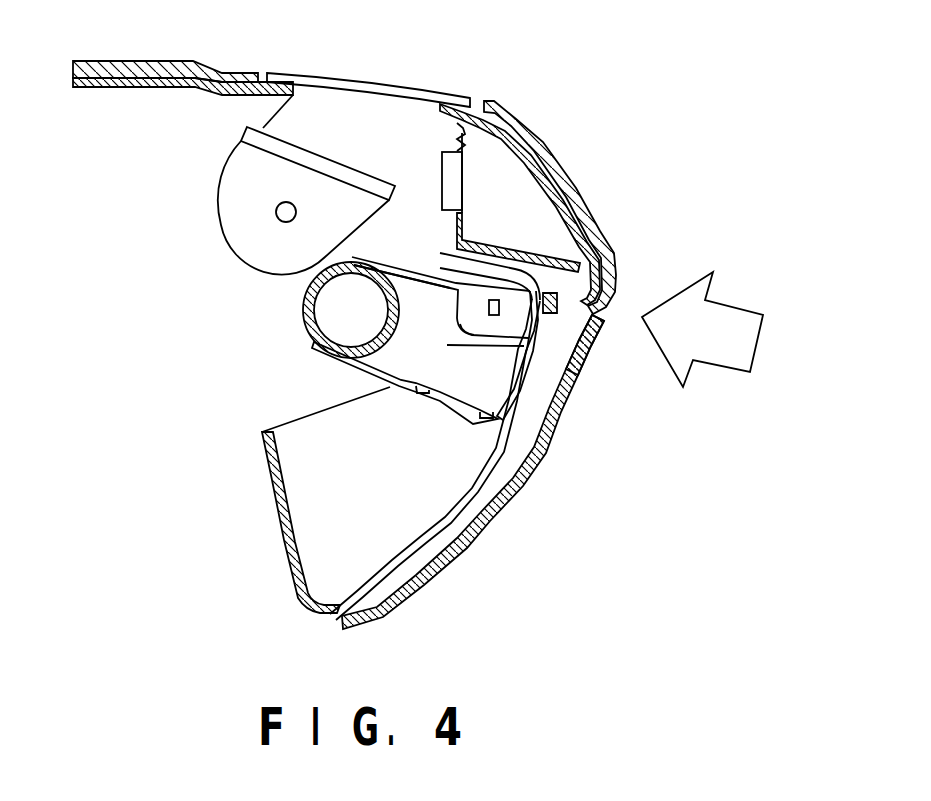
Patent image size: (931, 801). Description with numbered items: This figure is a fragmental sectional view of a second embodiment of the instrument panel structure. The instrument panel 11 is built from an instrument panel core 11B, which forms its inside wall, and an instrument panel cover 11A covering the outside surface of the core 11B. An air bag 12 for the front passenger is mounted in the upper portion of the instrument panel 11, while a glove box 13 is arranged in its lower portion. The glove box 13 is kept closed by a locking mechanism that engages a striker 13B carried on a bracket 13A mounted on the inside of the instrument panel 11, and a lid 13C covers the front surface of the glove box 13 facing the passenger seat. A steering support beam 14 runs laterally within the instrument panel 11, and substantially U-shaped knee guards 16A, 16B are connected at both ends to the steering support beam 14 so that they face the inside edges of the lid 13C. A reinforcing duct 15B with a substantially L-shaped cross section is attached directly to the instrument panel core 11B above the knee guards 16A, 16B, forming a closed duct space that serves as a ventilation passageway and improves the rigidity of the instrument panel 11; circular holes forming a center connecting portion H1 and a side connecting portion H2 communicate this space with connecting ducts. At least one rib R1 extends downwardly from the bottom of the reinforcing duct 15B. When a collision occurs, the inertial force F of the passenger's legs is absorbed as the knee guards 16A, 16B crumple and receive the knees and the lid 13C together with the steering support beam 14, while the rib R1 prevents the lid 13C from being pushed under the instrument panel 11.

The instrument panel 11 is at (663, 75).
The instrument panel cover 11A is at (540, 140).
The instrument panel core 11B is at (553, 168).
The air bag 12 is at (312, 140).
The glove box 13 is at (487, 477).
The bracket 13A is at (455, 257).
The striker 13B is at (580, 367).
The lid 13C is at (448, 560).
The steering support beam 14 is at (303, 316).
The reinforcing duct 15B is at (553, 255).
The knee guard 16A is at (353, 375).
The knee guard 16B is at (402, 276).
The center connecting portion H1 is at (447, 172).
The side connecting portion H2 is at (494, 307).
The rib R1 is at (478, 333).
The inertial force F is at (720, 329).